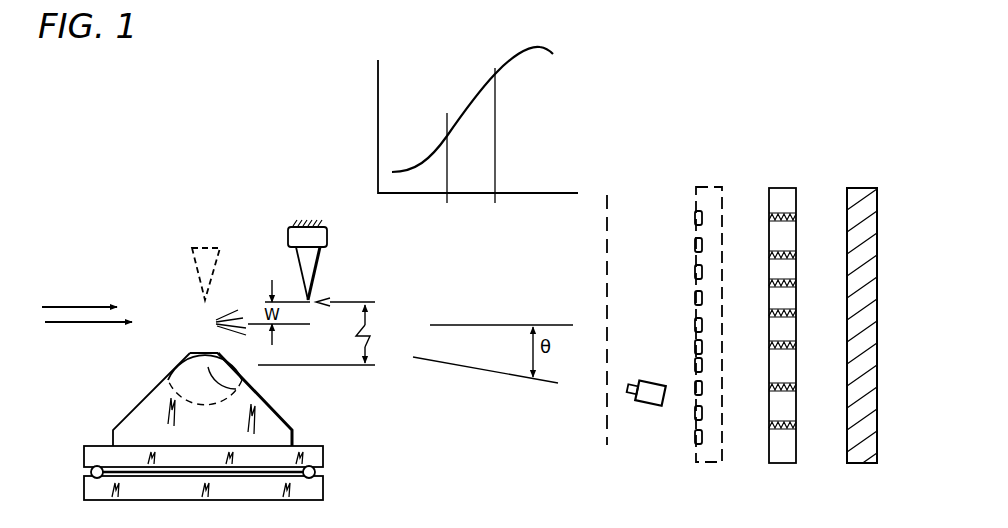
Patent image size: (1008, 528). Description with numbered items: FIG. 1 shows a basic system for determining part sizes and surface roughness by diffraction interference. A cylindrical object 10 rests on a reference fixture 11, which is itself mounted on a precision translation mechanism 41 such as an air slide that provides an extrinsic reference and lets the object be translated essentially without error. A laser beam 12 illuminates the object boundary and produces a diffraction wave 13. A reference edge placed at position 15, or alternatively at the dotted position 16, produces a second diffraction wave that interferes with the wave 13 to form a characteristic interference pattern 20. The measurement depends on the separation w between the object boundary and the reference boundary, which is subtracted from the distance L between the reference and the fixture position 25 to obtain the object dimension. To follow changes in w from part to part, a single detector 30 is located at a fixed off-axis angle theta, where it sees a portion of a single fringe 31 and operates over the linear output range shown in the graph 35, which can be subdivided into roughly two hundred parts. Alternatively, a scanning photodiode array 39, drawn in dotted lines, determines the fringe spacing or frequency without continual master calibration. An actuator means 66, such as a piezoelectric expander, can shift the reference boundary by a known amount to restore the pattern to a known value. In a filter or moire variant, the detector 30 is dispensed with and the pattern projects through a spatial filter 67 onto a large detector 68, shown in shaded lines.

The cylindrical object 10 is at (116, 345).
The reference fixture 11 is at (138, 402).
The laser beam 12 is at (84, 304).
The diffraction wave 13 is at (222, 318).
The reference edge position 15 is at (305, 297).
The reference edge position 16 is at (203, 299).
The interference pattern 20 is at (607, 238).
The fixture position 25 is at (240, 378).
The detector 30 is at (648, 404).
The fringe 31 is at (607, 380).
The graph 35 is at (548, 46).
The scanning photodiode array 39 is at (696, 190).
The precision translation mechanism 41 is at (325, 456).
The actuator means 66 is at (327, 241).
The spatial filter 67 is at (770, 195).
The large detector 68 is at (847, 195).